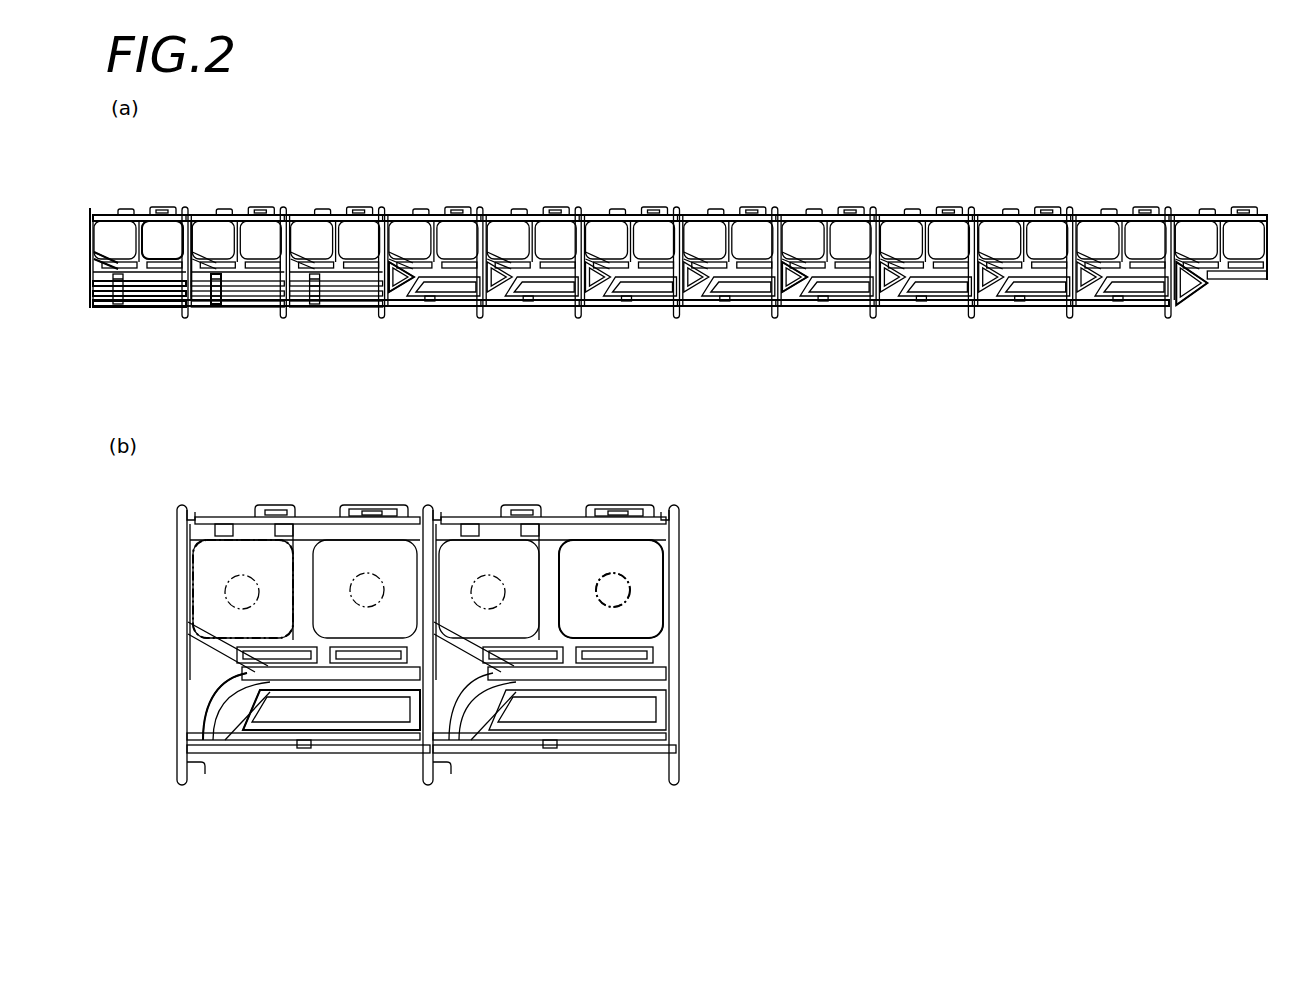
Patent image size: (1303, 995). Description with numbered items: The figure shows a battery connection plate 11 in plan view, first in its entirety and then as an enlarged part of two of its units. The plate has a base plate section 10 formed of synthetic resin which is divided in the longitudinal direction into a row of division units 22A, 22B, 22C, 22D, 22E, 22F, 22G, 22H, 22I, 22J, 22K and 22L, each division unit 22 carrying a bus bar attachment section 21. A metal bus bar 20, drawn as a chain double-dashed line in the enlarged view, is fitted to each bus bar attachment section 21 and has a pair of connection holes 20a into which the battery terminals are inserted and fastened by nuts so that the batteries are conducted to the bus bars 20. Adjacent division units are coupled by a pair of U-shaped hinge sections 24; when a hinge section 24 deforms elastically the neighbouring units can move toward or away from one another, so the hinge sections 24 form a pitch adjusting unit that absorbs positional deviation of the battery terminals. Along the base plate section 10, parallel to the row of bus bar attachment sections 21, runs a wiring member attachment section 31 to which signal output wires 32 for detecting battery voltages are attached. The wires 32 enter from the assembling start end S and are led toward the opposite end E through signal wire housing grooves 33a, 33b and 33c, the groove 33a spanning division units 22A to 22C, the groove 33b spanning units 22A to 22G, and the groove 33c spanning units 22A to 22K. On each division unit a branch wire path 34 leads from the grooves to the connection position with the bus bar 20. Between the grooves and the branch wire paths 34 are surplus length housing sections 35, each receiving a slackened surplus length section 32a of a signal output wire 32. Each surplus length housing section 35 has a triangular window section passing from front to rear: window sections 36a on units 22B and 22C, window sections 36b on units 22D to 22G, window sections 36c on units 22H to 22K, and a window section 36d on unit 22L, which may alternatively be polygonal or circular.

The base plate section 10 is at (660, 200).
The battery connection plate 11 is at (972, 160).
The bus bar 20 is at (268, 517).
The connection hole 20a is at (640, 590).
The bus bar attachment section 21 is at (160, 224).
The division unit 22 is at (577, 550).
The division unit 22A is at (128, 215).
The division unit 22B is at (222, 215).
The division unit 22C is at (335, 215).
The division unit 22D is at (432, 215).
The division unit 22E is at (530, 215).
The division unit 22F is at (628, 215).
The division unit 22G is at (728, 215).
The division unit 22H is at (826, 215).
The division unit 22I is at (922, 215).
The division unit 22J is at (1024, 215).
The division unit 22K is at (1122, 215).
The division unit 22L is at (1220, 215).
The hinge section 24 is at (186, 208).
The wiring member attachment section 31 is at (358, 309).
The signal output wire 32 is at (325, 668).
The surplus length section 32a is at (463, 682).
The signal wire housing groove 33a is at (110, 284).
The signal wire housing groove 33b is at (115, 296).
The signal wire housing groove 33c is at (148, 308).
The branch wire path 34 is at (100, 257).
The surplus length housing section 35 is at (196, 298).
The window section 36a is at (216, 300).
The window section 36b is at (401, 291).
The window section 36c is at (795, 291).
The window section 36d is at (1192, 295).
The assembling start end S is at (88, 210).
The terminal end E is at (1268, 213).